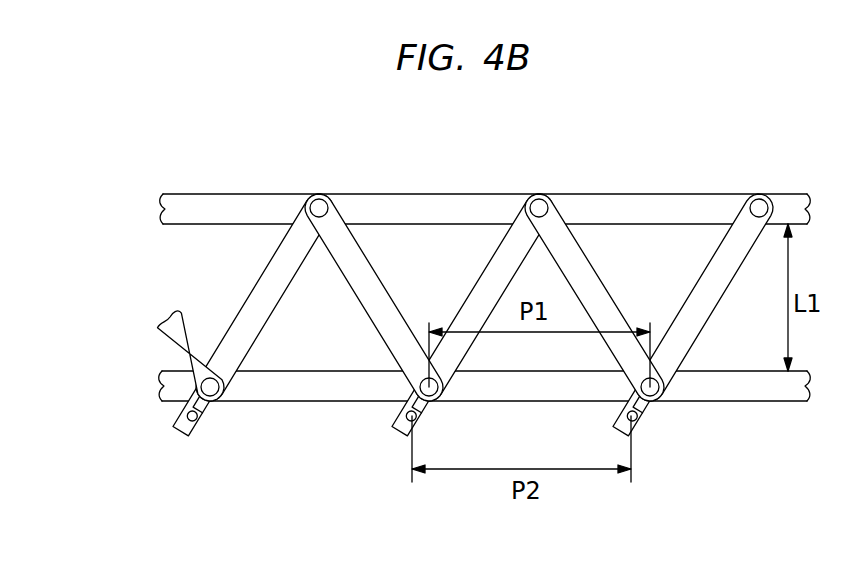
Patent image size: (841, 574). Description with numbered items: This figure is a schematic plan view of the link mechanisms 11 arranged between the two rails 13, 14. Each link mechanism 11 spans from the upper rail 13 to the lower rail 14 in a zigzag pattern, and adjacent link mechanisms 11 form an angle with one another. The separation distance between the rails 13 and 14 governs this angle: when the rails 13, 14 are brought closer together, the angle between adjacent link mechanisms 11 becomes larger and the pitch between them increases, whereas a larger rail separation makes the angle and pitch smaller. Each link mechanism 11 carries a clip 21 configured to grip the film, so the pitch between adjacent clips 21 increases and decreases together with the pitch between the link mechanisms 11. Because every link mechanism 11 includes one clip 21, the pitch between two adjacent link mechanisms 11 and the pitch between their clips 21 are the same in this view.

The link mechanism 11 is at (253, 288).
The rail 13 is at (178, 212).
The rail 14 is at (175, 388).
The clip 21 is at (207, 410).